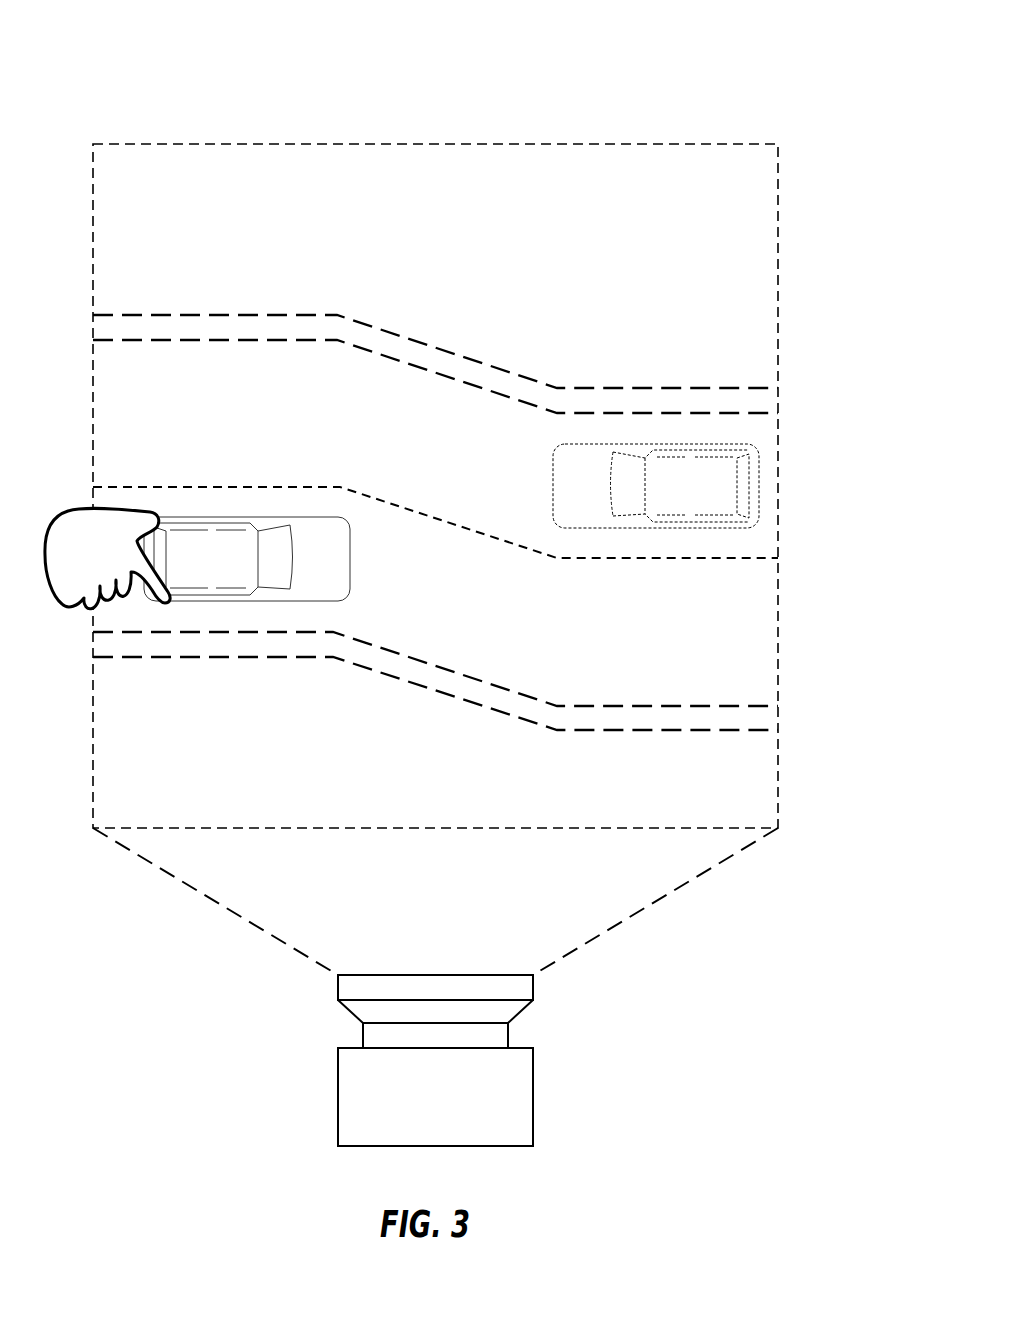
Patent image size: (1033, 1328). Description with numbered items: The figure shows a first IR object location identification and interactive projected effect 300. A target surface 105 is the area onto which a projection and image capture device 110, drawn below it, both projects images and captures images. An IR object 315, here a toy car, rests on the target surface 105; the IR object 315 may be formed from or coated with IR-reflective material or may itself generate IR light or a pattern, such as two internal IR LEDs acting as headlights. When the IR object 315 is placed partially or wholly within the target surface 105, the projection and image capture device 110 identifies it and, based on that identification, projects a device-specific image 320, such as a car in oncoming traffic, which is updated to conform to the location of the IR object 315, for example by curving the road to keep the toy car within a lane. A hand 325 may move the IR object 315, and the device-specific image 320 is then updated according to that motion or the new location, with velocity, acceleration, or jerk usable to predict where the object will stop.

The first IR object location identification and interactive projected effect 300 is at (711, 48).
The target surface 105 is at (118, 160).
The projection and image capture device 110 is at (348, 1122).
The IR object 315 is at (228, 558).
The device-specific image 320 is at (708, 490).
The hand 325 is at (94, 612).